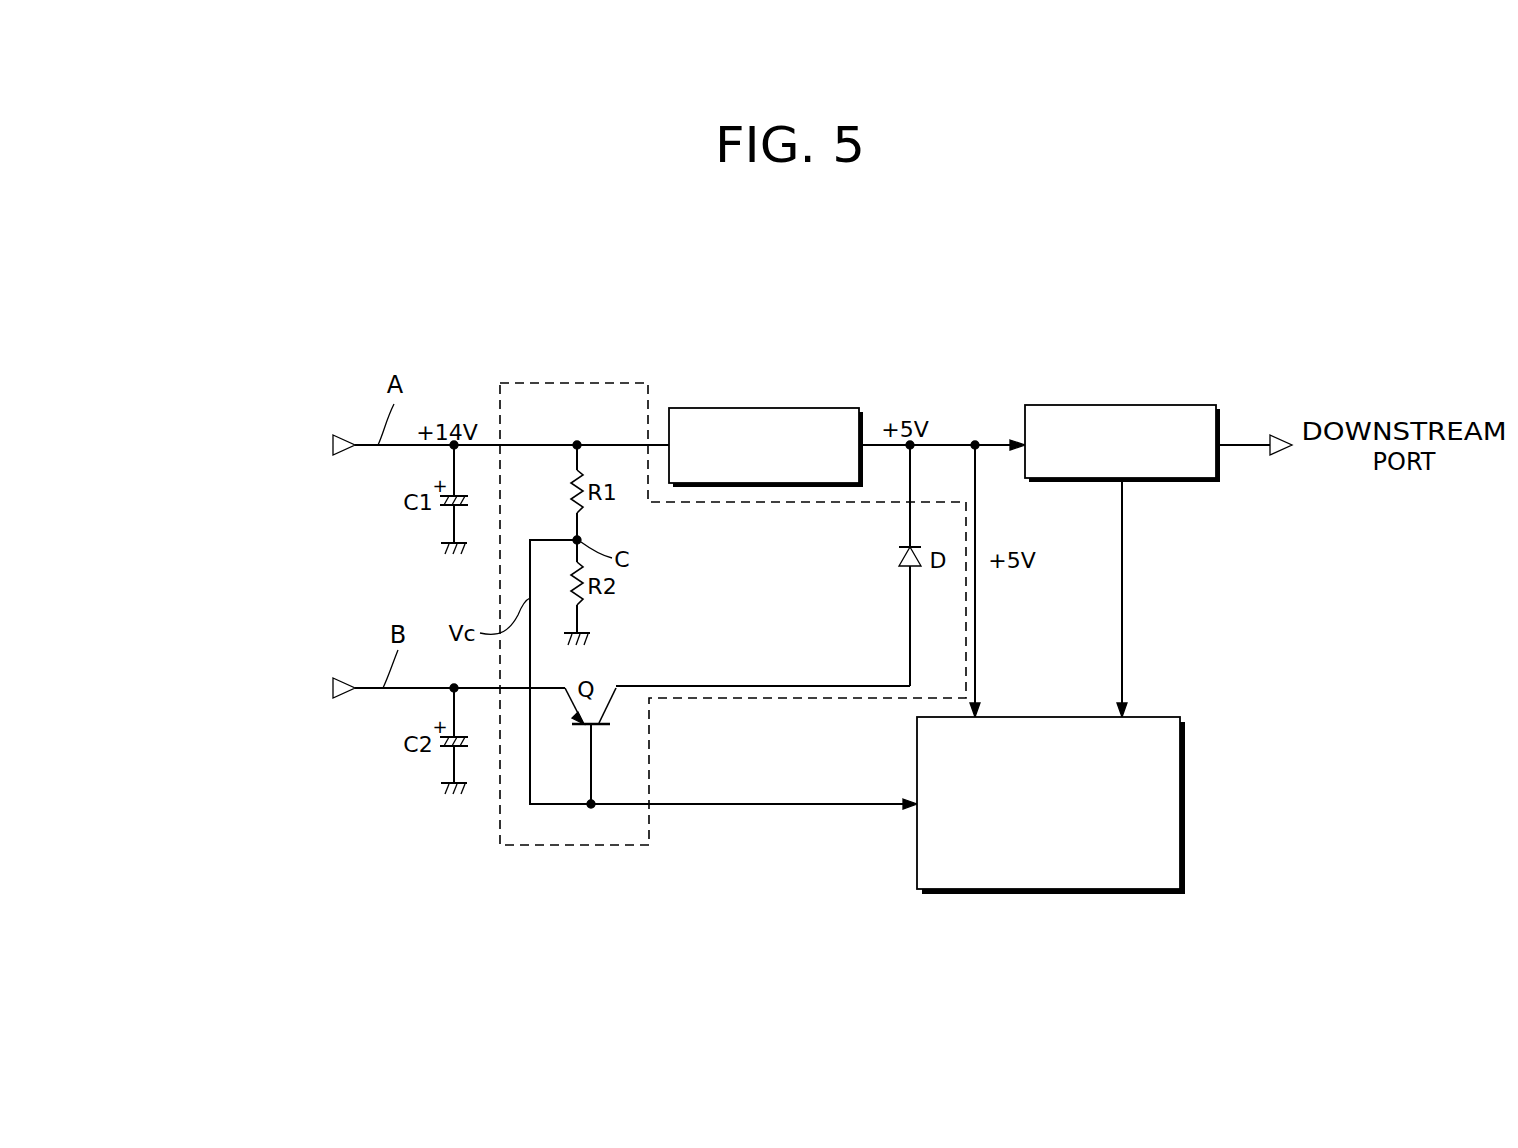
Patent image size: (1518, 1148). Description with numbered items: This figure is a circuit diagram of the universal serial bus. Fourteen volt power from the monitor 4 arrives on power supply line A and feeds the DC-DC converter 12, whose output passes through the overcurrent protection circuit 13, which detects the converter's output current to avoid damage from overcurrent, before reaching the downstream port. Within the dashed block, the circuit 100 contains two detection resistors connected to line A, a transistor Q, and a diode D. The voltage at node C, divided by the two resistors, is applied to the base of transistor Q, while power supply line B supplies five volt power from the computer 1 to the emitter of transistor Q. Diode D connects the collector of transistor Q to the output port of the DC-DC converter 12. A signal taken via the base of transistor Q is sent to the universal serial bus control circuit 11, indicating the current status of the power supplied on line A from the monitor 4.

The universal serial bus control circuit 100 is at (570, 383).
The DC-DC converter 12 is at (768, 408).
The overcurrent protection circuit 13 is at (1122, 405).
The universal serial bus control circuit 11 is at (1072, 889).
The monitor 4 is at (243, 464).
The computer 1 is at (241, 706).